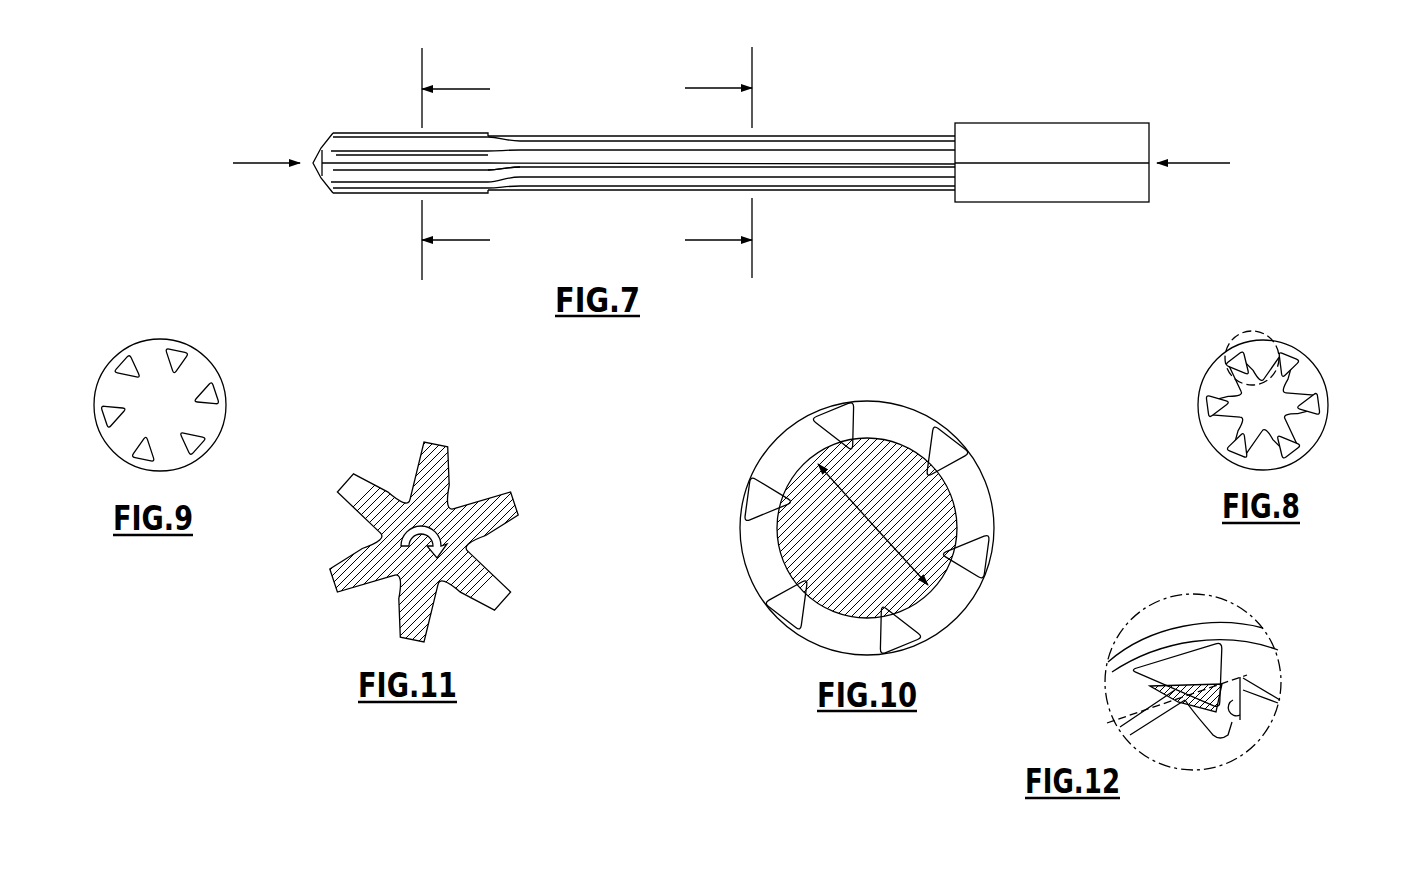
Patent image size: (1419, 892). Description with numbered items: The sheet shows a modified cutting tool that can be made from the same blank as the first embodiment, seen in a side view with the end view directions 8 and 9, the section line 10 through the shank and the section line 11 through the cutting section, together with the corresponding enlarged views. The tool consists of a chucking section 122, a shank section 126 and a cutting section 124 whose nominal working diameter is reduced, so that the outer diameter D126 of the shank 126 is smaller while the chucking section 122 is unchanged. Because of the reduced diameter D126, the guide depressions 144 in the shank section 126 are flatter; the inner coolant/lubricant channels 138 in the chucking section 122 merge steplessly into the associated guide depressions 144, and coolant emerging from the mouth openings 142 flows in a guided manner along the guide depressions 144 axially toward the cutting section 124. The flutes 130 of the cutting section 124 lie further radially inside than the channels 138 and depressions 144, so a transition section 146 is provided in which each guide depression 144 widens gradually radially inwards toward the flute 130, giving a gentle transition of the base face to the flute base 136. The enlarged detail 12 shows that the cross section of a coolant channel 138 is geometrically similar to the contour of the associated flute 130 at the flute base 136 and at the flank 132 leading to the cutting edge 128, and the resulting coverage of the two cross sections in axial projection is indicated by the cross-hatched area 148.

In FIG. 7, the view direction 8 is at (250, 165).
In FIG. 7, the view direction 9 is at (1187, 165).
In FIG. 7, the section line 10 is at (740, 162).
In FIG. 7, the section line 11 is at (431, 164).
In FIG. 8, the detail 12 is at (1266, 333).
In FIG. 7, the chucking section 122 is at (1033, 137).
In FIG. 7, the cutting section 124 is at (457, 123).
In FIG. 7, the shank section 126 is at (865, 128).
In FIG. 11, the cutting edge 128 is at (421, 446).
In FIG. 7, the flute 130 is at (362, 176).
In FIG. 11, the flute 130 is at (432, 466).
In FIG. 12, the flute 130 is at (1223, 725).
In FIG. 11, the flank 132 is at (493, 583).
In FIG. 12, the flank 132 is at (1240, 708).
In FIG. 11, the flute base 136 is at (478, 509).
In FIG. 12, the flute base 136 is at (1207, 740).
In FIG. 9, the coolant/lubricant channel 138 is at (172, 358).
In FIG. 12, the coolant/lubricant channel 138 is at (1214, 660).
In FIG. 10, the mouth opening 142 is at (940, 456).
In FIG. 10, the guide depression 144 is at (850, 452).
In FIG. 8, the guide depression 144 is at (1296, 372).
In FIG. 7, the transition section 146 is at (510, 174).
In FIG. 12, the cross-hatched area 148 is at (1192, 702).
In FIG. 10, the outer diameter of the shank D126 is at (900, 531).